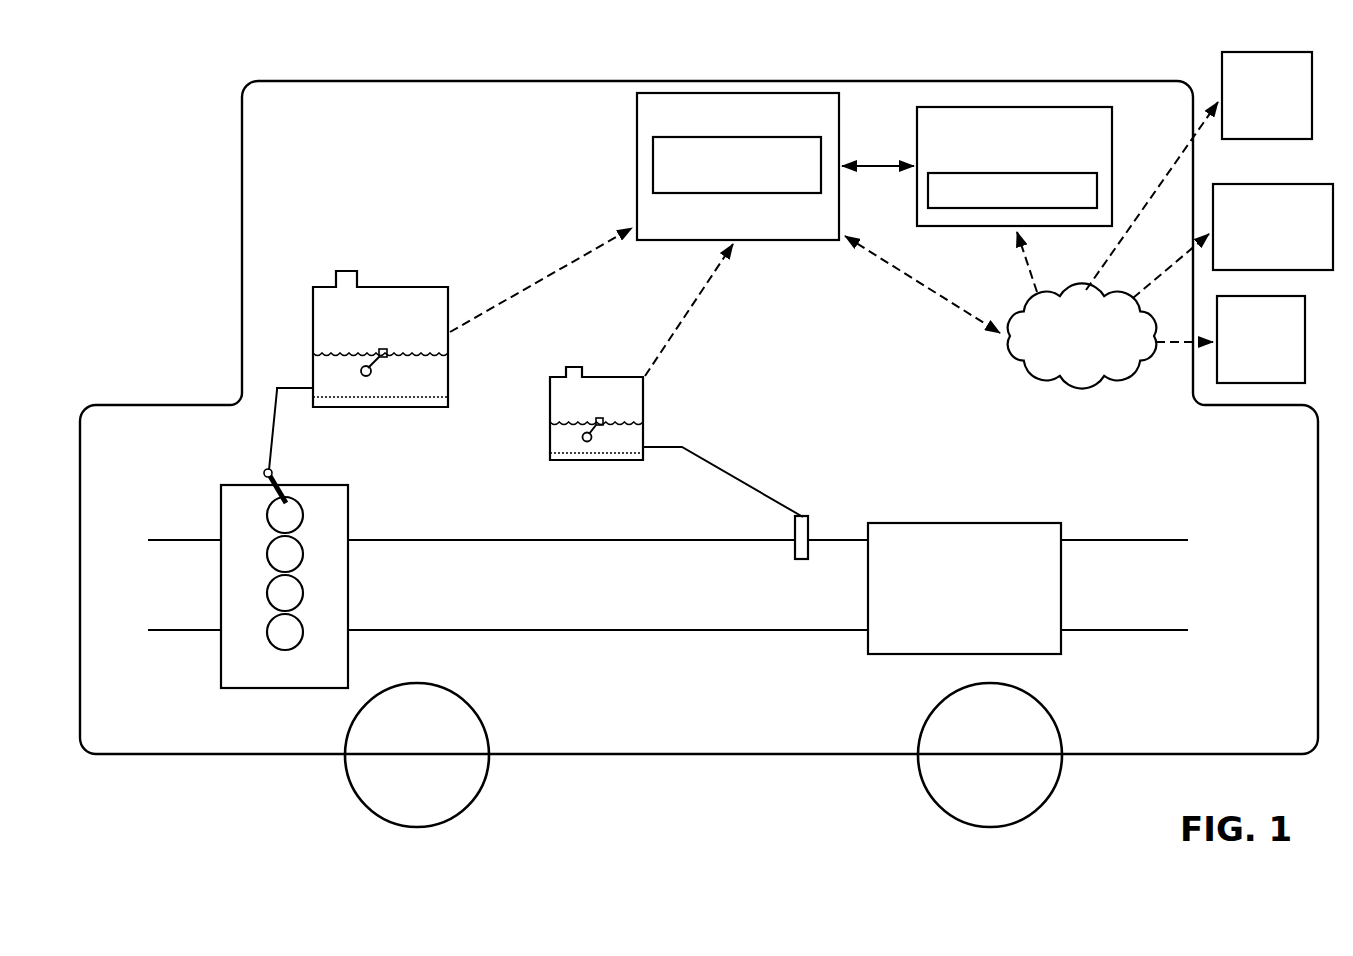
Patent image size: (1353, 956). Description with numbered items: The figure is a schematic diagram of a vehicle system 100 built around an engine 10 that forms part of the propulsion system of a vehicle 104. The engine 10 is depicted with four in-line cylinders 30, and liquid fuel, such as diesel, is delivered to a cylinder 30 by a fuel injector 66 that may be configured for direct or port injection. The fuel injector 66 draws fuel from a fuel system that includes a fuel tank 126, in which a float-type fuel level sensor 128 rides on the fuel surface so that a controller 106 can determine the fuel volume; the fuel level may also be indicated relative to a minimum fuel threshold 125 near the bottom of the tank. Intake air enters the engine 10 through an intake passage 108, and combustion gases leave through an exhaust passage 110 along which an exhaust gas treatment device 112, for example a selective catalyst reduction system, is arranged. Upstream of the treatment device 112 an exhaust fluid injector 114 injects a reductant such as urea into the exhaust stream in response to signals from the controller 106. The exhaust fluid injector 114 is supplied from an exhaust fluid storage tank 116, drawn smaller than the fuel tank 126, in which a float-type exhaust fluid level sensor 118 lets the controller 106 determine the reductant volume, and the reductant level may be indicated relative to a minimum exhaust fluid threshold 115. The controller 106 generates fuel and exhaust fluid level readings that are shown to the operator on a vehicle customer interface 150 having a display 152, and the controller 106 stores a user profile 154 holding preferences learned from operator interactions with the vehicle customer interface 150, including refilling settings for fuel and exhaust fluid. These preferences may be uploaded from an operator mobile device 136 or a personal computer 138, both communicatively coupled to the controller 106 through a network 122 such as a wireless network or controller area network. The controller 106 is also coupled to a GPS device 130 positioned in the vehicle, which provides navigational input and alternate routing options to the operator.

The vehicle system 100 is at (148, 126).
The vehicle 104 is at (600, 81).
The controller 106 is at (738, 166).
The user profile 154 is at (737, 165).
The vehicle customer interface 150 is at (1014, 166).
The display 152 is at (1012, 190).
The mobile device 136 is at (1267, 95).
The personal computer 138 is at (1273, 227).
The GPS device 130 is at (1261, 339).
The network 122 is at (1082, 335).
The fuel tank 126 is at (381, 287).
The fuel level sensor 128 is at (380, 350).
The minimum fuel threshold 125 is at (340, 397).
The fuel injector 66 is at (287, 462).
The cylinders 30 is at (297, 510).
The engine 10 is at (284, 586).
The intake passage 108 is at (184, 585).
The exhaust passage 110 is at (768, 585).
The exhaust gas treatment device 112 is at (964, 588).
The exhaust fluid injector 114 is at (808, 524).
The exhaust fluid storage tank 116 is at (598, 377).
The exhaust fluid level sensor 118 is at (597, 419).
The minimum exhaust fluid threshold 115 is at (568, 453).